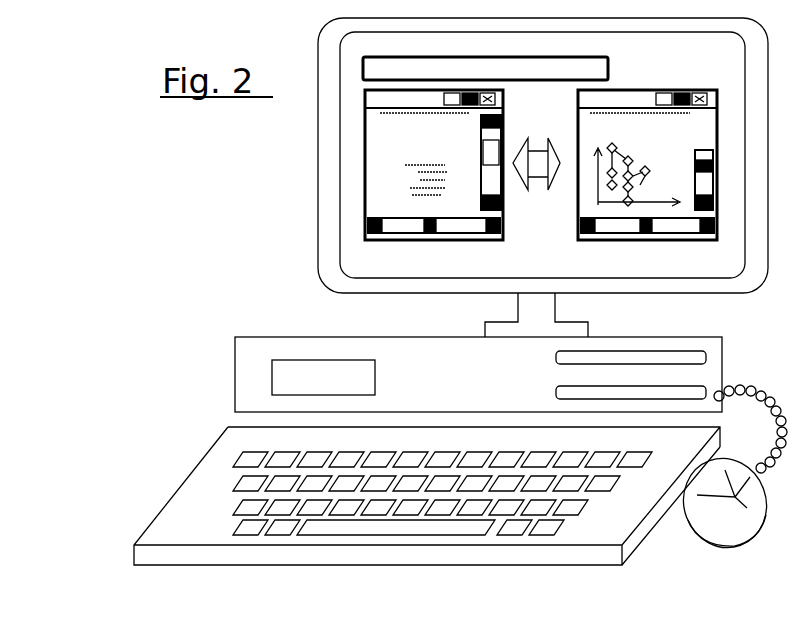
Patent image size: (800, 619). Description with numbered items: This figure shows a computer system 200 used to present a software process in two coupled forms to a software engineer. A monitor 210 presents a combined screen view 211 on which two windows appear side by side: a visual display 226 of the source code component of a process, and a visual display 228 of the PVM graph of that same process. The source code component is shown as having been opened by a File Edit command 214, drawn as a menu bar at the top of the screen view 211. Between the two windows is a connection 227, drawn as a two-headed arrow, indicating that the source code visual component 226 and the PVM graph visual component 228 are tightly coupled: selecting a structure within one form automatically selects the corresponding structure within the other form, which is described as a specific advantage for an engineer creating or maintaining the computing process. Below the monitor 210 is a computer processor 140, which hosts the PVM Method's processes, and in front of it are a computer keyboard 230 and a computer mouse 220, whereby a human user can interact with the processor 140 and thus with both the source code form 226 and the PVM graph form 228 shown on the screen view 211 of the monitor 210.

The computer system 200 is at (240, 134).
The computer processor 140 is at (243, 402).
The monitor 210 is at (359, 293).
The combined screen view 211 is at (324, 281).
The File Edit command 214 is at (610, 70).
The computer mouse 220 is at (697, 560).
The source code visual component 226 is at (434, 179).
The connection 227 is at (534, 193).
The PVM graph visual component 228 is at (647, 179).
The computer keyboard 230 is at (600, 566).